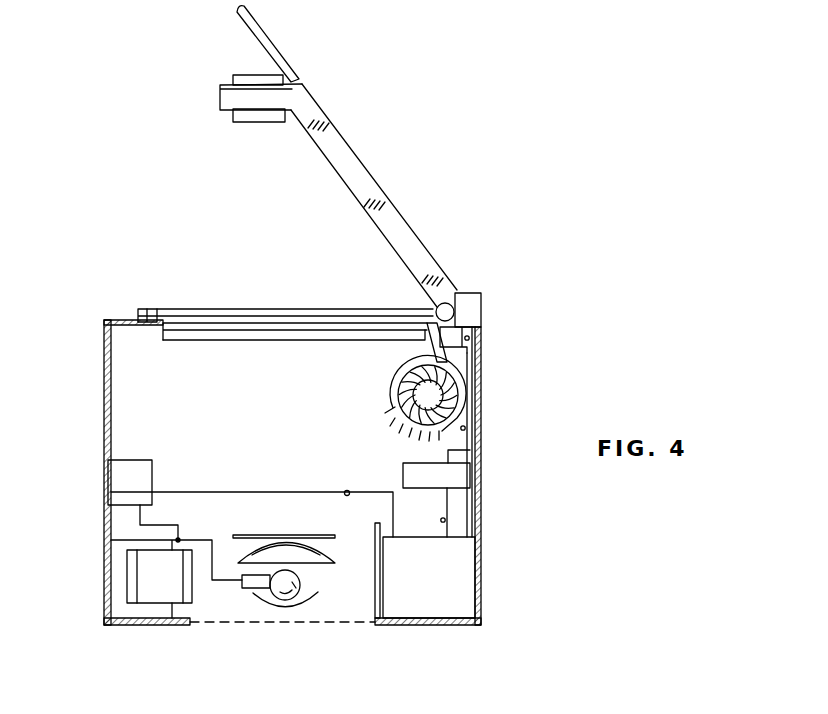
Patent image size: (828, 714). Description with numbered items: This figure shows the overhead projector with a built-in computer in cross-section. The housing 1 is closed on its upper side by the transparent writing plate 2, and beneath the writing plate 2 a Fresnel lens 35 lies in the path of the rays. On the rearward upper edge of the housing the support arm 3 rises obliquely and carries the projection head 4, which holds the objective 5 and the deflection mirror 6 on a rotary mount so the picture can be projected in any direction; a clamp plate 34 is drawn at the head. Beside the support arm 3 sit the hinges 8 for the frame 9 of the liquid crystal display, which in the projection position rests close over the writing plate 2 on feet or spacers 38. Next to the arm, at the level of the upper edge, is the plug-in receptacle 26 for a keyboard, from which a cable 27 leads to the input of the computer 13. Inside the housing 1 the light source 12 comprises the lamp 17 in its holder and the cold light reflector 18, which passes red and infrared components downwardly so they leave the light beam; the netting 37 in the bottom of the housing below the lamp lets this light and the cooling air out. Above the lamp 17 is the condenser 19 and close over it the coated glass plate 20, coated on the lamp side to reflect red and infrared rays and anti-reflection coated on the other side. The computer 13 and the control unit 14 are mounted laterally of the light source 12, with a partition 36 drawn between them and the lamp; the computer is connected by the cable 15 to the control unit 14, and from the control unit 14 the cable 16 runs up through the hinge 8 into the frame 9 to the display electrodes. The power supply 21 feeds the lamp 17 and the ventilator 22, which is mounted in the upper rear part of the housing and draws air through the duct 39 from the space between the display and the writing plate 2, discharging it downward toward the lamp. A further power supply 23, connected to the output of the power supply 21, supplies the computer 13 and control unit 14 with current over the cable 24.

The housing 1 is at (104, 341).
The writing plate 2 is at (214, 325).
The support arm 3 is at (342, 150).
The projection head 4 is at (292, 100).
The objective 5 is at (255, 75).
The deflection mirror 6 is at (270, 50).
The hinges 8 is at (441, 306).
The frame 9 is at (310, 308).
The light source 12 is at (270, 610).
The computer 13 is at (440, 568).
The control unit 14 is at (443, 480).
The cable 15 is at (445, 520).
The cable 16 is at (465, 428).
The lamp 17 is at (297, 593).
The reflector 18 is at (283, 607).
The condenser 19 is at (328, 565).
The coated glass plate 20 is at (243, 535).
The power supply 21 is at (158, 577).
The ventilator 22 is at (430, 383).
The further power supply 23 is at (123, 483).
The cable 24 is at (348, 495).
The plug-in receptacle 26 is at (481, 293).
The cable 27 is at (469, 337).
The lower clamp plate 34 is at (222, 83).
The Fresnel lens 35 is at (262, 338).
The partition plate 36 is at (380, 617).
The netting 37 is at (225, 623).
The feet or spacers 38 is at (148, 308).
The duct 39 is at (427, 330).